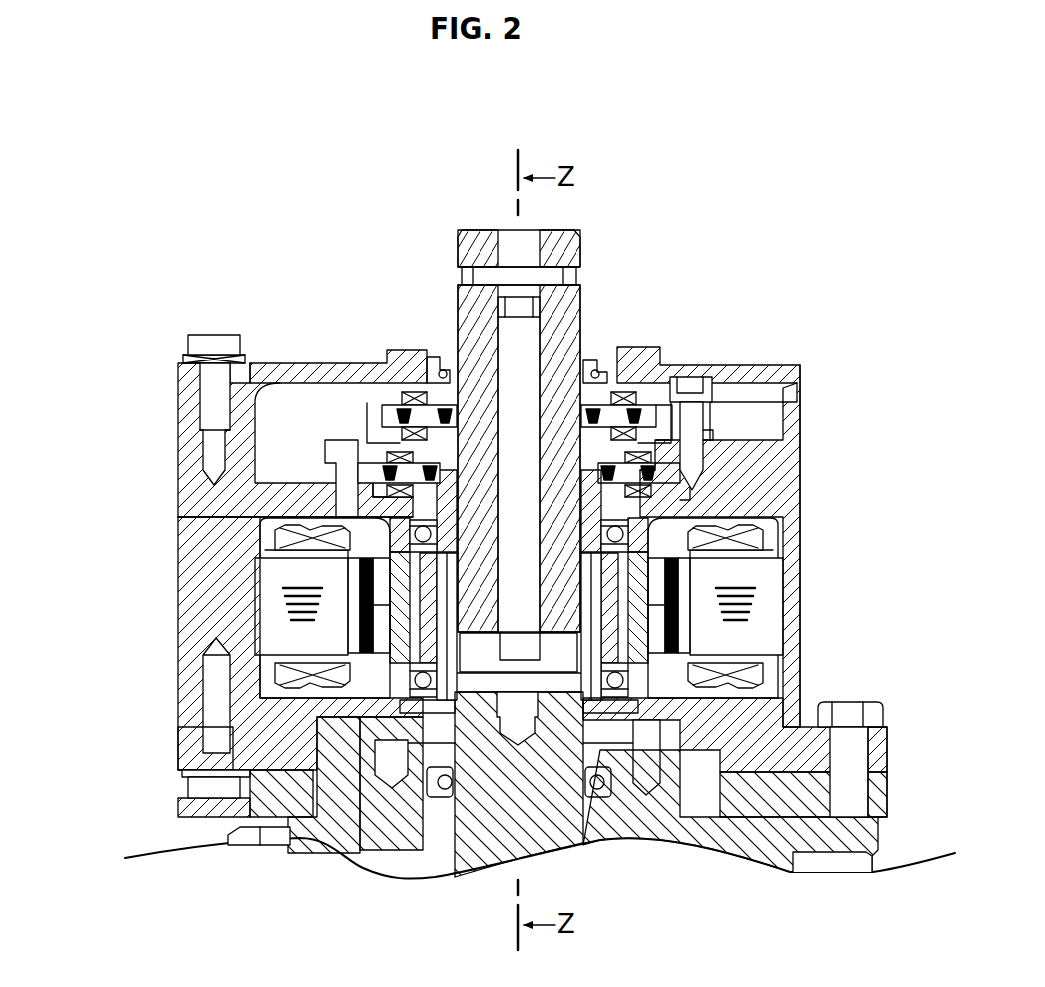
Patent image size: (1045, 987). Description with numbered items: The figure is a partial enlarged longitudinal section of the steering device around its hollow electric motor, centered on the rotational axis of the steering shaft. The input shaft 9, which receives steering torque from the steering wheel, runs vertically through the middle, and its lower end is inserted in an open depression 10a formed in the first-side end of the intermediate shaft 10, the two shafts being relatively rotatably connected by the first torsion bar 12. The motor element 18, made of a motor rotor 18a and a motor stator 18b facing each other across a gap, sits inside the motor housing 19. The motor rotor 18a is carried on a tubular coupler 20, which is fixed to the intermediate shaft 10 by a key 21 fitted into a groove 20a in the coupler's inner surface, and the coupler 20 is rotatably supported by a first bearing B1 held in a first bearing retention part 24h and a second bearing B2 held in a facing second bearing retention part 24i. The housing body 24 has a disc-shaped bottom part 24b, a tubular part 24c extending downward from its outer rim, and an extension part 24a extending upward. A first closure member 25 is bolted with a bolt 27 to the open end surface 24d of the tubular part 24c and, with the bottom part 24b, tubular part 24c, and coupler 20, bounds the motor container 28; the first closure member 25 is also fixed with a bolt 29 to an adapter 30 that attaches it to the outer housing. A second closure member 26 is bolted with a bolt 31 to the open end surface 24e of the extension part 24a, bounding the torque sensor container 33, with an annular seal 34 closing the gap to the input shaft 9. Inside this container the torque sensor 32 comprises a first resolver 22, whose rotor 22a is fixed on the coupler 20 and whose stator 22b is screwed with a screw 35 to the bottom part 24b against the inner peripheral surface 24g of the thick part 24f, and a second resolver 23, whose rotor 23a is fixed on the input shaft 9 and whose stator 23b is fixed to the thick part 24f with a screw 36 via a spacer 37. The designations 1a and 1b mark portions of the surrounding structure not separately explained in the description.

The housing wall 1a is at (808, 600).
The base 1b is at (897, 855).
The input shaft 9 is at (560, 302).
The intermediate shaft 10 is at (550, 757).
The open depression 10a is at (640, 550).
The first torsion bar 12 is at (516, 343).
The motor element 18 is at (125, 573).
The motor rotor 18a is at (262, 566).
The motor stator 18b is at (275, 636).
The motor housing 19 is at (60, 358).
The coupler 20 is at (682, 602).
The groove 20a is at (415, 775).
The key 21 is at (455, 700).
The first resolver 22 is at (730, 292).
The first resolver rotor 22a is at (695, 428).
The first resolver stator 22b is at (706, 447).
The second resolver 23 is at (615, 292).
The second resolver rotor 23a is at (604, 403).
The second resolver stator 23b is at (642, 472).
The housing body 24 is at (340, 542).
The extension part 24a is at (196, 438).
The bottom part 24b is at (282, 496).
The tubular part 24c is at (192, 678).
The open end surface 24d is at (210, 758).
The open end surface 24e is at (243, 368).
The thick part 24f is at (755, 466).
The inner peripheral surface 24g is at (690, 497).
The first bearing retention part 24h is at (345, 522).
The second bearing retention part 24i is at (360, 755).
The first closure member 25 is at (195, 740).
The second closure member 26 is at (180, 378).
The bolt 27 is at (210, 790).
The motor container 28 is at (360, 580).
The bolt 29 is at (870, 706).
The adapter 30 is at (880, 790).
The bolt 31 is at (217, 336).
The torque sensor 32 is at (800, 246).
The torque sensor container 33 is at (765, 422).
The seal 34 is at (446, 360).
The screw 35 is at (333, 448).
The screw 36 is at (777, 403).
The spacer 37 is at (700, 465).
The first bearing B1 is at (630, 536).
The second bearing B2 is at (625, 682).